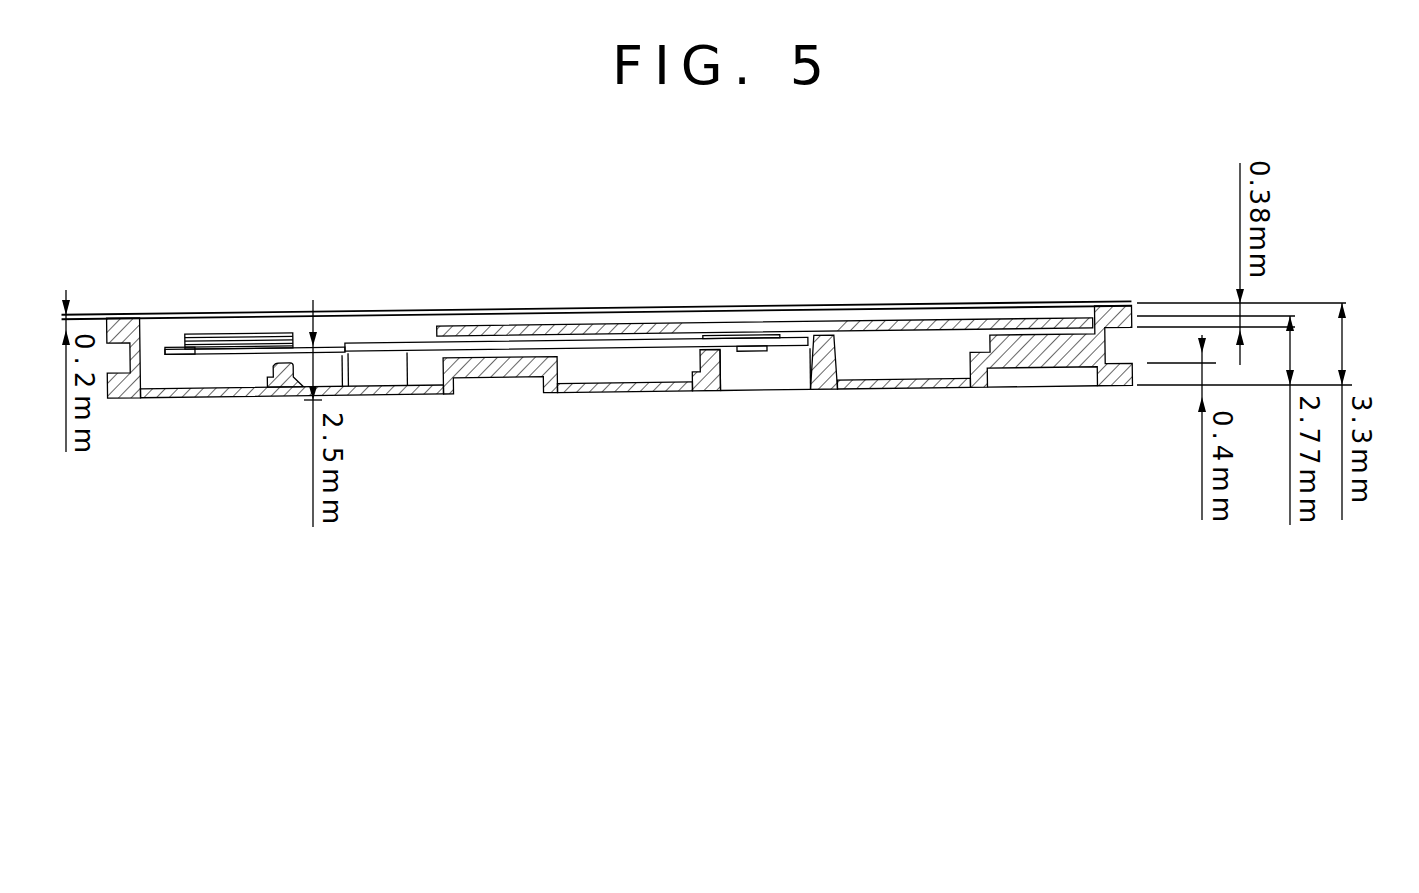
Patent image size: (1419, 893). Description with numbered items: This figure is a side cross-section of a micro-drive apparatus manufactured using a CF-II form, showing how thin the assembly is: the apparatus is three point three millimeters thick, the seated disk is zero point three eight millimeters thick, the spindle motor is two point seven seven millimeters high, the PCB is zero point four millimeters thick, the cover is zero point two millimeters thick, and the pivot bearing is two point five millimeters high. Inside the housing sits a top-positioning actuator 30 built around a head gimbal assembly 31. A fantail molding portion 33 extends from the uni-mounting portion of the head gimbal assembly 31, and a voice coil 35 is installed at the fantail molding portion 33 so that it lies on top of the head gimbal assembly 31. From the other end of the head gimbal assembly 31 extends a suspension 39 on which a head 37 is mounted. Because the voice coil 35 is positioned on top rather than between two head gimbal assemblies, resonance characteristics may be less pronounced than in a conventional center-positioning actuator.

The actuator 30 is at (327, 316).
The head gimbal assembly 31 is at (390, 345).
The fantail molding portion 33 is at (172, 346).
The voice coil 35 is at (227, 340).
The head 37 is at (782, 368).
The suspension 39 is at (607, 348).